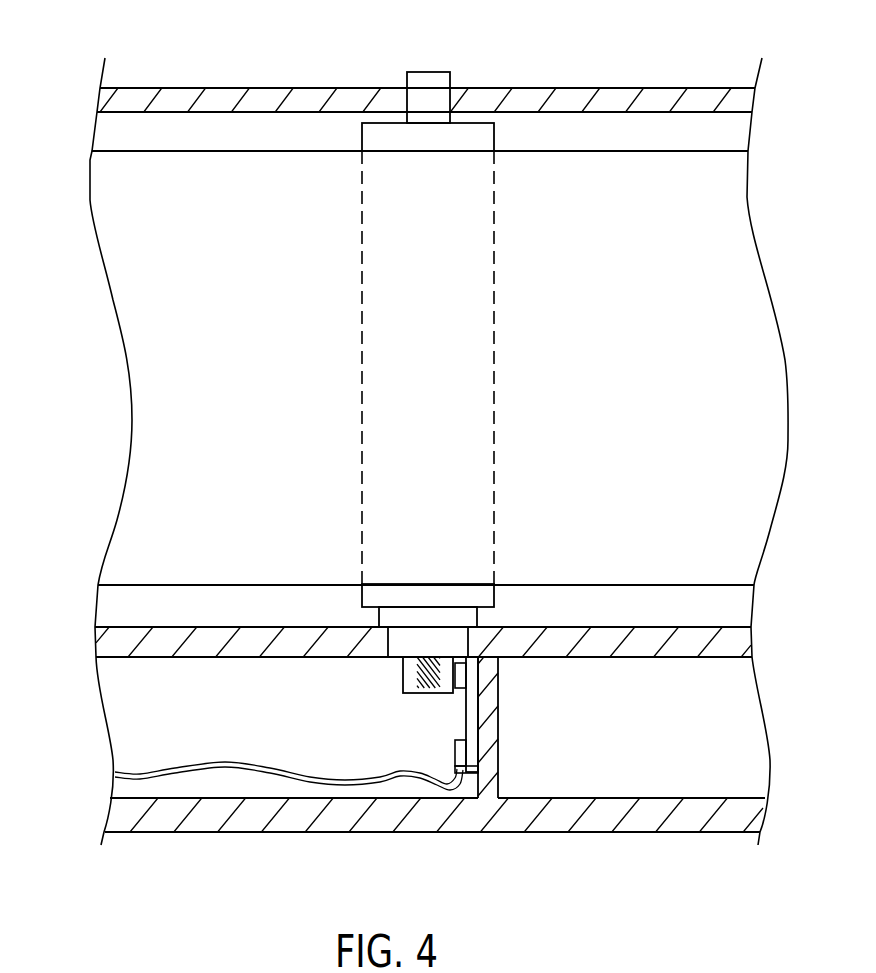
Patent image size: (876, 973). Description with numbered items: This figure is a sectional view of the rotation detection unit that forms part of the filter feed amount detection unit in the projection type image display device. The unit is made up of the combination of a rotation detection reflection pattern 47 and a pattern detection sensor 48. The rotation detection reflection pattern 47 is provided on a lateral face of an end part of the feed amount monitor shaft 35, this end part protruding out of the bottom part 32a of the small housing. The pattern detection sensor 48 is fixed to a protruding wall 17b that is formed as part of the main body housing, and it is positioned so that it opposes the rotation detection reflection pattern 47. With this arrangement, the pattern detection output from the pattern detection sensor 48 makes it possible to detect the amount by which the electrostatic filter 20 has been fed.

The electrostatic filter 20 is at (138, 352).
The feed amount monitor shaft 35 is at (390, 130).
The bottom part 32a is at (105, 650).
The rotation detection reflection pattern 47 is at (428, 693).
The pattern detection sensor 48 is at (458, 692).
The protruding wall 17b is at (492, 717).